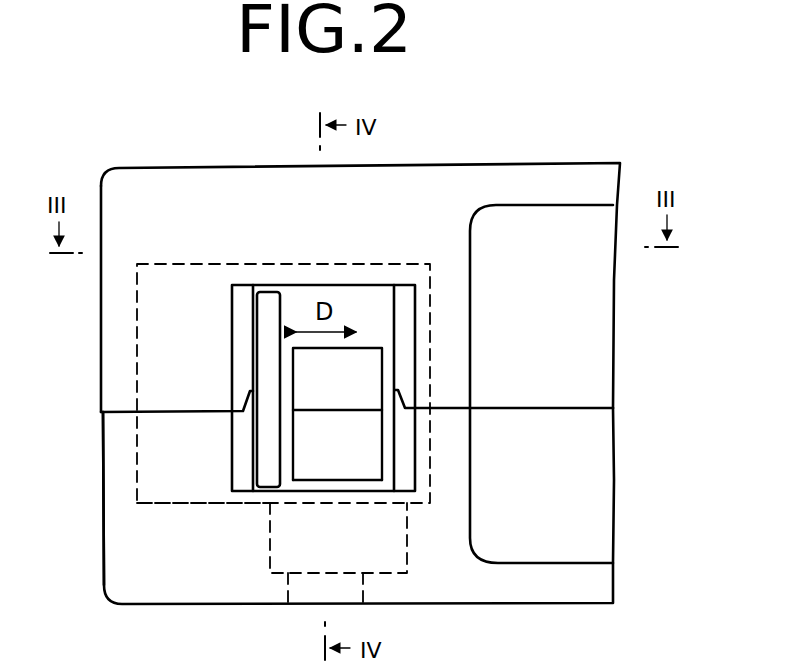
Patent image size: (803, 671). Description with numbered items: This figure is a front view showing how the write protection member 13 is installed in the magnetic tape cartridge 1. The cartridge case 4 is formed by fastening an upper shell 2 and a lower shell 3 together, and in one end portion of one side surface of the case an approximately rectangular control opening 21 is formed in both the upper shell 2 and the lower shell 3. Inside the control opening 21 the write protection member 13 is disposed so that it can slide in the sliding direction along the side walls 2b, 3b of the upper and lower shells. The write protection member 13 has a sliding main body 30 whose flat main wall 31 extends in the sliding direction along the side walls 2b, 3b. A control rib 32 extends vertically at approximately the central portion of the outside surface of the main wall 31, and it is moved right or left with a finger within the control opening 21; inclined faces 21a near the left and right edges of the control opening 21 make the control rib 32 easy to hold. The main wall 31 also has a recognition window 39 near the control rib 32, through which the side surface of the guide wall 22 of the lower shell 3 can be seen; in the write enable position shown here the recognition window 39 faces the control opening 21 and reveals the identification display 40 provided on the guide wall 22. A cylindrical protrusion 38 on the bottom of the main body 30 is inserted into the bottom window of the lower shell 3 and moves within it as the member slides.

The magnetic tape cartridge 1 is at (112, 123).
The upper shell 2 is at (443, 172).
The side wall of upper shell 2b is at (112, 312).
The lower shell 3 is at (470, 588).
The side wall of lower shell 3b is at (115, 489).
The cartridge case 4 is at (620, 401).
The write protection member 13 is at (292, 296).
The control opening 21 is at (393, 352).
The inclined faces 21a is at (241, 344).
The guide wall 22 is at (330, 408).
The sliding main body 30 is at (375, 258).
The main wall 31 is at (183, 493).
The control rib 32 is at (262, 427).
The protrusion 38 is at (288, 583).
The recognition window 39 is at (362, 474).
The identification display 40 is at (328, 458).